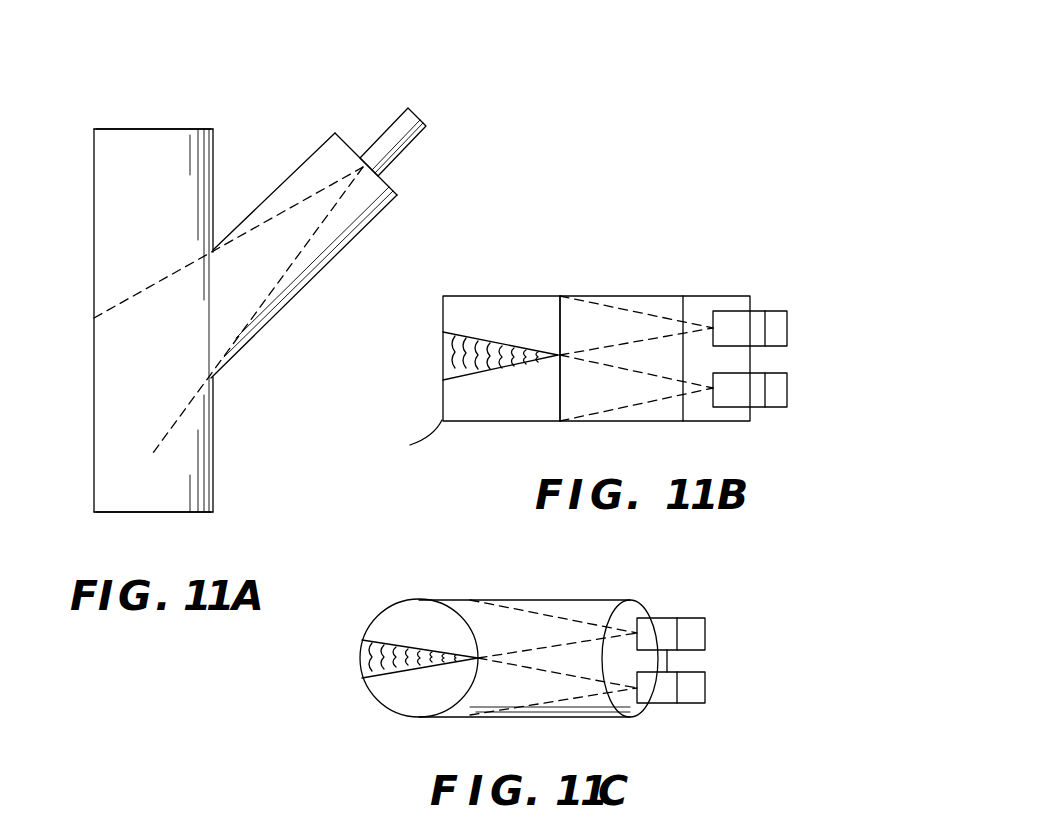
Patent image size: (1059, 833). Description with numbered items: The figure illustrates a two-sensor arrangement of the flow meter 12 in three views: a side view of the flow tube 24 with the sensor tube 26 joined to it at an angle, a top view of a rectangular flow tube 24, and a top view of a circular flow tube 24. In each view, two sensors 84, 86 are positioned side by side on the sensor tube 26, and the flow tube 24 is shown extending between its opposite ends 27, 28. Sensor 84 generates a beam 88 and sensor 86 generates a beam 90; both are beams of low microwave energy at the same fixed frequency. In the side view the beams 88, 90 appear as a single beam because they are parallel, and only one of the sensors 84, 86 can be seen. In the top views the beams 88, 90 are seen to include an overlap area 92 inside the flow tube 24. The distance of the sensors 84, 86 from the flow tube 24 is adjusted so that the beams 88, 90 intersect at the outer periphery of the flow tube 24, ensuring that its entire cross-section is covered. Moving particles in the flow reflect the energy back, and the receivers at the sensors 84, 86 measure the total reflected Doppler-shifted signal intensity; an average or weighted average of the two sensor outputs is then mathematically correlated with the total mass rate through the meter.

In FIG. 11A, the ultrasonic flow meter 12 is at (270, 112).
In FIG. 11A, the flow tube 24 is at (94, 258).
In FIG. 11B, the flow tube 24 is at (443, 402).
In FIG. 11C, the flow tube 24 is at (392, 607).
In FIG. 11A, the sensor tube 26 is at (262, 330).
In FIG. 11B, the sensor tube 26 is at (612, 235).
In FIG. 11C, the sensor tube 26 is at (518, 600).
In FIG. 11A, the flow tube inlet end 27 is at (166, 128).
In FIG. 11A, the flow tube outlet end 28 is at (165, 512).
In FIG. 11A, the sensor 84 is at (411, 112).
In FIG. 11B, the sensor 84 is at (760, 408).
In FIG. 11C, the sensor 84 is at (705, 690).
In FIG. 11A, the sensor 86 is at (393, 142).
In FIG. 11B, the sensor 86 is at (763, 258).
In FIG. 11C, the sensor 86 is at (705, 635).
In FIG. 11B, the beam 88 is at (653, 402).
In FIG. 11C, the beam 88 is at (565, 700).
In FIG. 11B, the beam 90 is at (640, 310).
In FIG. 11C, the beam 90 is at (560, 618).
In FIG. 11B, the overlap area 92 is at (531, 358).
In FIG. 11C, the overlap area 92 is at (365, 660).